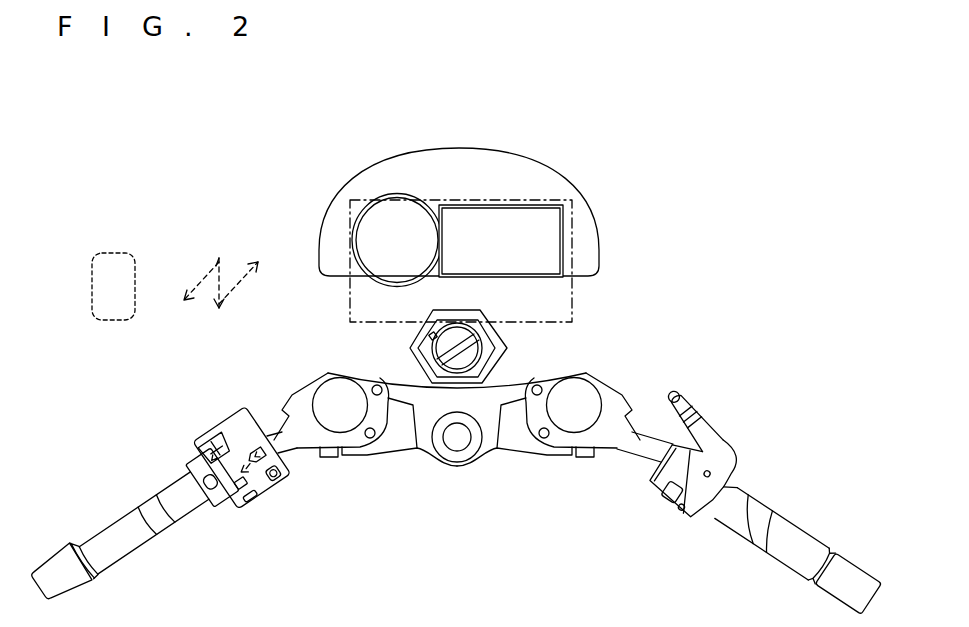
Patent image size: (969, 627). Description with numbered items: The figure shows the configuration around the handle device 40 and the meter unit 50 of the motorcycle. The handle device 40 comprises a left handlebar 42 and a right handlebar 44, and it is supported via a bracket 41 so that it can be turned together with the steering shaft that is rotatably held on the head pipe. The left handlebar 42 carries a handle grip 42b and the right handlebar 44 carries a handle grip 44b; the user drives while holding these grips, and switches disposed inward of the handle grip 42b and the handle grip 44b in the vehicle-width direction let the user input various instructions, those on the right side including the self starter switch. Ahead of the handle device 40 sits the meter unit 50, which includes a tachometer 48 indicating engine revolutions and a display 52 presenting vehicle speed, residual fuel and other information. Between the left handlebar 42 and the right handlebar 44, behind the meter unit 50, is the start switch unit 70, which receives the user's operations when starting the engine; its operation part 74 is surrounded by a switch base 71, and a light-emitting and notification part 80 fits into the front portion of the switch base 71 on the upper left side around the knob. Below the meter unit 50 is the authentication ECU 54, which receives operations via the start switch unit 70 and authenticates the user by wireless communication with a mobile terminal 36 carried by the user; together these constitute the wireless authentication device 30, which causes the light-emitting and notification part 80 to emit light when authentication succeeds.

The wireless authentication device 30 is at (462, 242).
The mobile terminal 36 is at (114, 253).
The handle device 40 is at (464, 496).
The bracket 41 is at (488, 447).
The left handlebar 42 is at (159, 496).
The handle grip 42b is at (60, 575).
The right handlebar 44 is at (763, 507).
The handle grip 44b is at (848, 583).
The tachometer 48 is at (407, 205).
The meter unit 50 is at (501, 189).
The display 52 is at (483, 218).
The authentication electronic control unit (ECU) 54 is at (350, 310).
The start switch unit 70 is at (462, 332).
The switch base 71 is at (482, 321).
The operation part 74 is at (420, 354).
The light-emitting and notification part 80 is at (432, 335).